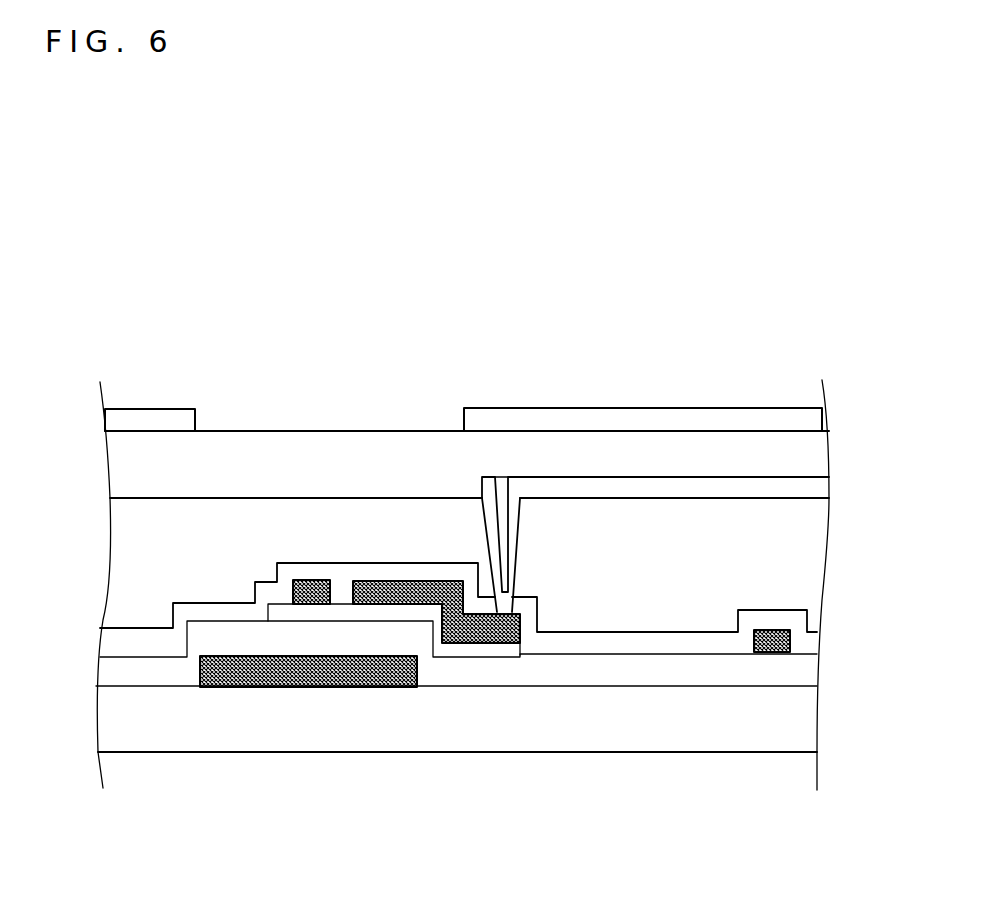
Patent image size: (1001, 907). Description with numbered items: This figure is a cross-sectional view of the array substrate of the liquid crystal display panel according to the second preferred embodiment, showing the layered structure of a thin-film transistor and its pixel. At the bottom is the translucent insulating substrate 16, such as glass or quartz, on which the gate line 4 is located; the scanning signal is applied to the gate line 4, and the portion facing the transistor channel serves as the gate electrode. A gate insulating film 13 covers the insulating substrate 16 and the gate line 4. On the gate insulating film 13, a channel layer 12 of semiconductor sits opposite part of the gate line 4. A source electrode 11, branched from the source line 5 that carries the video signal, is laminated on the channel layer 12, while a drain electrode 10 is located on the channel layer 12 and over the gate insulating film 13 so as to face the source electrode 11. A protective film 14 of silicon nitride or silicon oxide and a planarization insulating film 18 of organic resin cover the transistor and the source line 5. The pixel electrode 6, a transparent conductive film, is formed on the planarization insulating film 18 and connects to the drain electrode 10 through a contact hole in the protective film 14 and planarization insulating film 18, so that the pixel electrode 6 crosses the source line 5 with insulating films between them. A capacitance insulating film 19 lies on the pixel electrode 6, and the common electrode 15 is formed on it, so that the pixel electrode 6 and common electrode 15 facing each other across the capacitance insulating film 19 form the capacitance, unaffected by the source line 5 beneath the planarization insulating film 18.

The gate line 4 is at (340, 723).
The source line 5 is at (753, 653).
The pixel electrode 6 is at (612, 492).
The drain electrode 10 is at (393, 590).
The source electrode 11 is at (312, 593).
The channel layer 12 is at (493, 648).
The gate insulating film 13 is at (372, 640).
The protective film 14 is at (672, 642).
The common electrode 15 is at (147, 424).
The insulating substrate 16 is at (165, 722).
The planarization insulating film 18 is at (732, 535).
The capacitance insulating film 19 is at (690, 460).